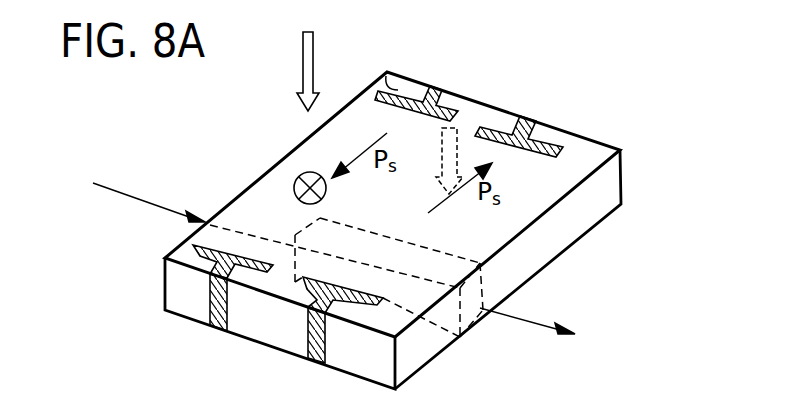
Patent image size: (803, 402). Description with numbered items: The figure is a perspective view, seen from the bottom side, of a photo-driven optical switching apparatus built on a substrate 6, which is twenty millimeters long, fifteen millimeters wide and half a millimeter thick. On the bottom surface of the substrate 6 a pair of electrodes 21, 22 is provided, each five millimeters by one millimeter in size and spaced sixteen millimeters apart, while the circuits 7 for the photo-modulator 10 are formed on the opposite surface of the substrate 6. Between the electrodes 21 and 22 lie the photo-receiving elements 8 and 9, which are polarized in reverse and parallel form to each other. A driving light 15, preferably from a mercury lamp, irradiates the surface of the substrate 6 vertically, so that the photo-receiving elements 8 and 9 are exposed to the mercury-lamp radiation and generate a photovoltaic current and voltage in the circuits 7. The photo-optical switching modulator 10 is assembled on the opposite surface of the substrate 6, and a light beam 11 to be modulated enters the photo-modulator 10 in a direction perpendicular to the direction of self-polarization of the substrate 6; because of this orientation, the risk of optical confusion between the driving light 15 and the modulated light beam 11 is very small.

The substrate 6 is at (605, 150).
The circuits 7 is at (438, 95).
The photo-receiving element 8 is at (294, 201).
The photo-receiving element 9 is at (346, 277).
The photo-modulator 10 is at (478, 311).
The light beam 11 is at (333, 259).
The driving light 15 is at (308, 32).
The electrode 21 is at (386, 75).
The electrode 22 is at (555, 146).